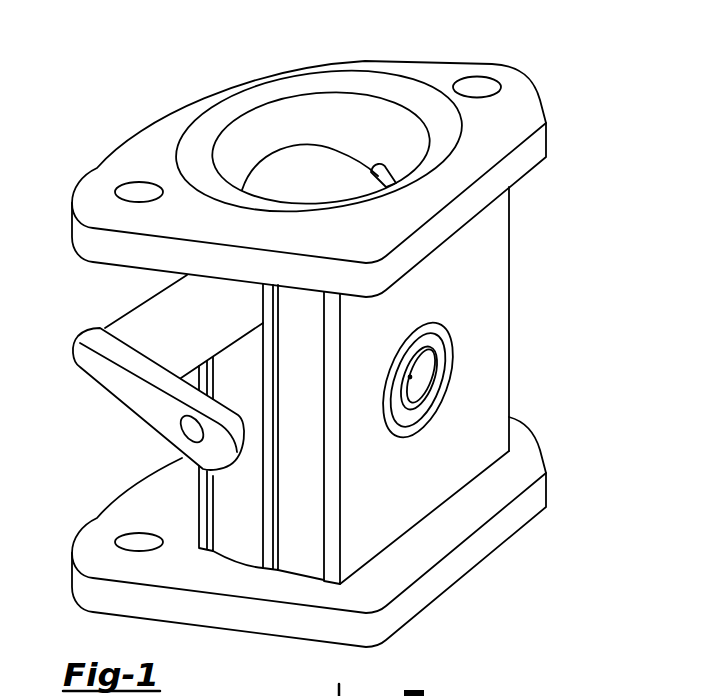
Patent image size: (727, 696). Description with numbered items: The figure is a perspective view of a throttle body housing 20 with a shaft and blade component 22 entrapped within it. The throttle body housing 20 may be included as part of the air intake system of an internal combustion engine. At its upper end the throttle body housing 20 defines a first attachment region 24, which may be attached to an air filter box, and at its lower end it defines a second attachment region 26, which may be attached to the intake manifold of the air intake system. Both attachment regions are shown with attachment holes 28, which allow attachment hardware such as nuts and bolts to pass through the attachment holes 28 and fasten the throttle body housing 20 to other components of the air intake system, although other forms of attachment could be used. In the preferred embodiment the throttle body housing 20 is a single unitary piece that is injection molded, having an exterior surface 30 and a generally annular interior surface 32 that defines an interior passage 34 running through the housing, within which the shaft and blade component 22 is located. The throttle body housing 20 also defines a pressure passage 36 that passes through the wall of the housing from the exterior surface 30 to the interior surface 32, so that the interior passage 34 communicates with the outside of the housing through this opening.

The throttle body housing 20 is at (482, 268).
The shaft and blade component 22 is at (315, 165).
The first attachment region 24 is at (516, 101).
The second attachment region 26 is at (481, 567).
The attachment holes 28 is at (139, 194).
The exterior surface 30 is at (233, 496).
The interior surface 32 is at (224, 153).
The interior passage 34 is at (298, 118).
The pressure passage 36 is at (411, 378).